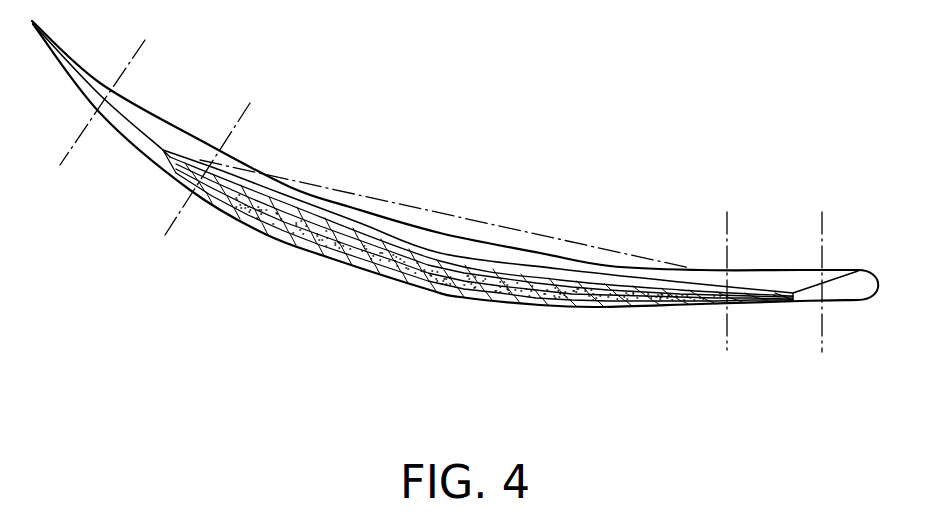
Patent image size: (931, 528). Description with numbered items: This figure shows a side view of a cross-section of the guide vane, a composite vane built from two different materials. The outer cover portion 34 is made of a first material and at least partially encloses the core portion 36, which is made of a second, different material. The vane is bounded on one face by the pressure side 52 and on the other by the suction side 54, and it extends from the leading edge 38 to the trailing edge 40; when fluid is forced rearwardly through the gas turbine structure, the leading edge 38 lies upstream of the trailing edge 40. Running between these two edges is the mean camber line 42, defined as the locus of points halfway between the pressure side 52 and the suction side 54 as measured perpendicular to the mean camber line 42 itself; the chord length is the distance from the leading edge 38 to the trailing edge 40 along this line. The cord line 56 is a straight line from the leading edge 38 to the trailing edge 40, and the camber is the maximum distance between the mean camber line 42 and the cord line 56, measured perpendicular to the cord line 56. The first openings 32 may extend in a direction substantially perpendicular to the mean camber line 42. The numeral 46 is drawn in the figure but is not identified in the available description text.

The first openings 32 is at (64, 164).
The cover portion 34 is at (265, 235).
The core portion 36 is at (330, 258).
The leading edge 38 is at (161, 146).
The trailing edge 40 is at (796, 314).
The mean camber line 42 is at (457, 282).
The intermediate ply 46 is at (402, 306).
The pressure side 52 is at (586, 240).
The suction side 54 is at (490, 327).
The cord line 56 is at (446, 189).